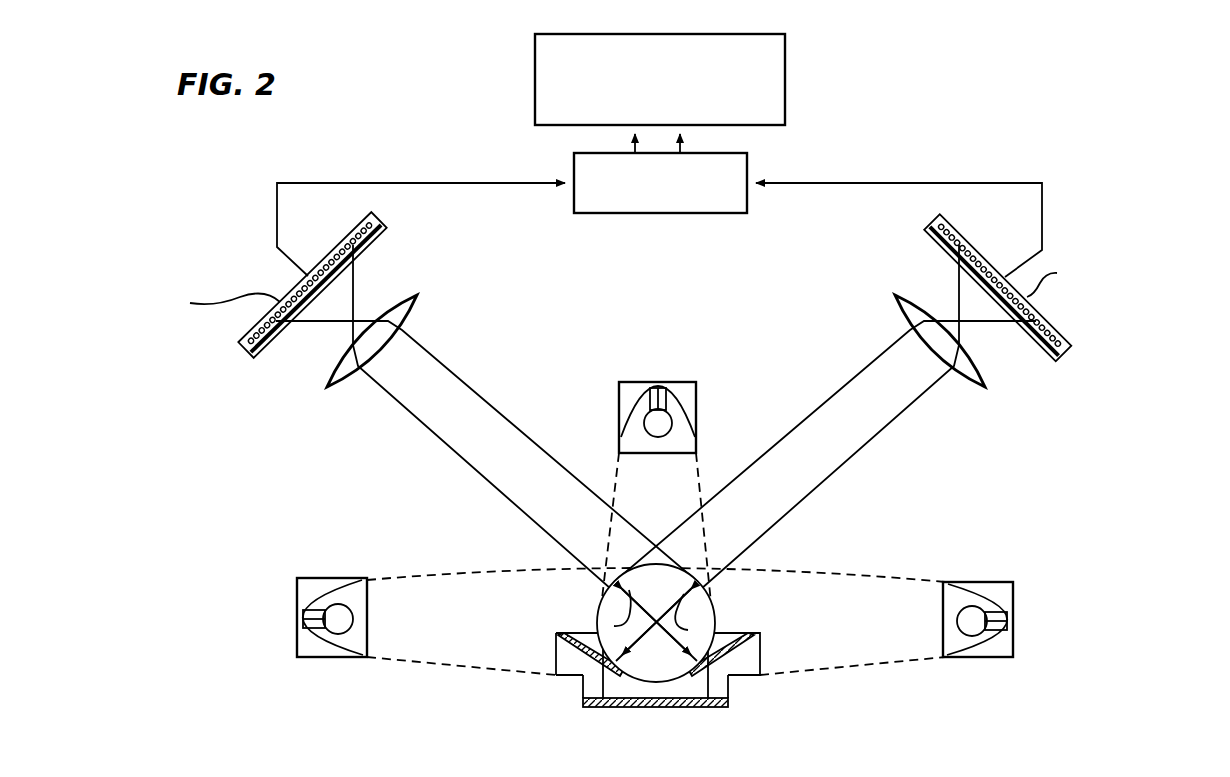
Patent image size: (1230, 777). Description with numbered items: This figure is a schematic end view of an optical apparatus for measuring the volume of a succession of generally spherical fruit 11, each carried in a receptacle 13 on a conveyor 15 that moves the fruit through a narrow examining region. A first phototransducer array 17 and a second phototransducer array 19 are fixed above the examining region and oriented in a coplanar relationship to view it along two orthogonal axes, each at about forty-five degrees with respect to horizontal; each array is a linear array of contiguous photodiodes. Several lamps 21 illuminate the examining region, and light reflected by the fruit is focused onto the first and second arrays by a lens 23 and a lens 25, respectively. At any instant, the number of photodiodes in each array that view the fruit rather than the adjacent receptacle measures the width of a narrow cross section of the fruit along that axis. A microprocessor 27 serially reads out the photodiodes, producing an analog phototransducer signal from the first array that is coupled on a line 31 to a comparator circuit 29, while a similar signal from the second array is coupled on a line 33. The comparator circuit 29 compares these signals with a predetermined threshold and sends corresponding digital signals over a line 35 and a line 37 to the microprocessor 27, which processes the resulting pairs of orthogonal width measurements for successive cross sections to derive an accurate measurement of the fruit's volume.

The fruit 11 is at (713, 602).
The receptacle 13 is at (563, 647).
The conveyor 15 is at (630, 708).
The first phototransducer array 17 is at (249, 353).
The second phototransducer array 19 is at (1062, 359).
The lamp 21 is at (697, 398).
The lens 23 is at (327, 387).
The lens 25 is at (985, 388).
The microprocessor 27 is at (787, 63).
The comparator circuit 29 is at (748, 174).
The line 31 is at (413, 183).
The line 33 is at (925, 183).
The line 35 is at (634, 148).
The line 37 is at (684, 148).